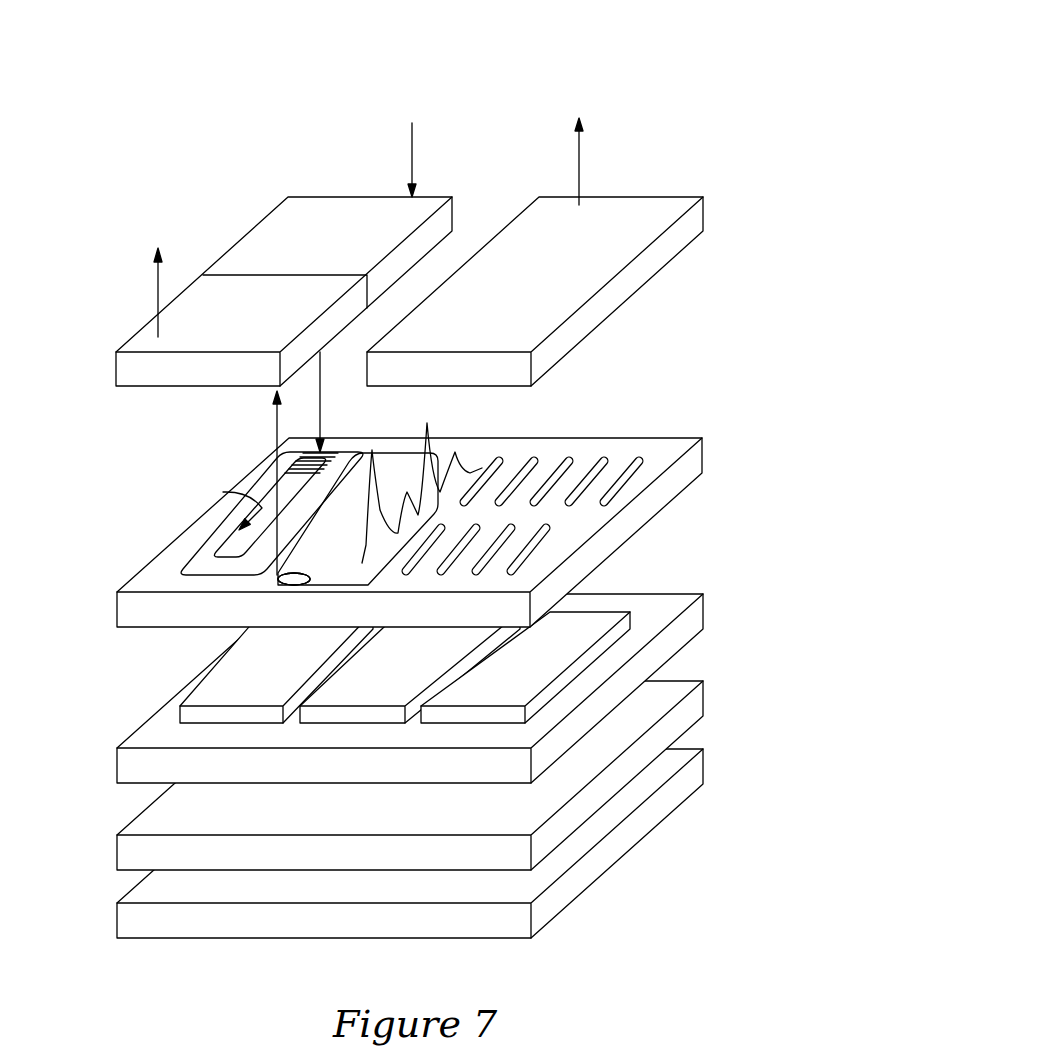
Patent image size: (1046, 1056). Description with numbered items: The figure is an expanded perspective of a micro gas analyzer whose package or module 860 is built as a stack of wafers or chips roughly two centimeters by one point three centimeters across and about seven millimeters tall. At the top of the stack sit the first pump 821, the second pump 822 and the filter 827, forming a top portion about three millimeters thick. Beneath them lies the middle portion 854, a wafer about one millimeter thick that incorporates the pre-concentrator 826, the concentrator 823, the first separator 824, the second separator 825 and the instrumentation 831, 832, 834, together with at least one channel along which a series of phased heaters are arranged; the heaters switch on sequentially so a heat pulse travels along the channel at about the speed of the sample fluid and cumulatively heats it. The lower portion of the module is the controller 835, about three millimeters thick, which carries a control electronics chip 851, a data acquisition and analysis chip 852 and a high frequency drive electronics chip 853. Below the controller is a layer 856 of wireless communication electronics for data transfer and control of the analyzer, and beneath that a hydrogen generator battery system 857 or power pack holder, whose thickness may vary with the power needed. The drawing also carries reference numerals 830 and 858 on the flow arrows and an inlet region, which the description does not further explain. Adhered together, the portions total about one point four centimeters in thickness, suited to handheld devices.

The package or module 860 is at (650, 84).
The flow path / fluid flow 830 is at (158, 306).
The filter 827 is at (433, 197).
The first pump 821 is at (125, 346).
The second pump 822 is at (680, 253).
The frit / inlet port 858 is at (337, 453).
The middle portion 854 is at (705, 445).
The second separator 825 is at (608, 495).
The first separator 824 is at (542, 552).
The pre-concentrator 826 is at (193, 556).
The concentrator 823 is at (343, 577).
The instrumentation 831 is at (320, 577).
The instrumentation 832 is at (294, 579).
The instrumentation 834 is at (294, 579).
The controller 835 is at (705, 597).
The wireless communication electronics layer 856 is at (705, 690).
The hydrogen generator battery system 857 is at (705, 758).
The control electronics chip 851 is at (268, 723).
The data acquisition and analysis chip 852 is at (382, 723).
The high frequency drive electronics chip 853 is at (506, 723).